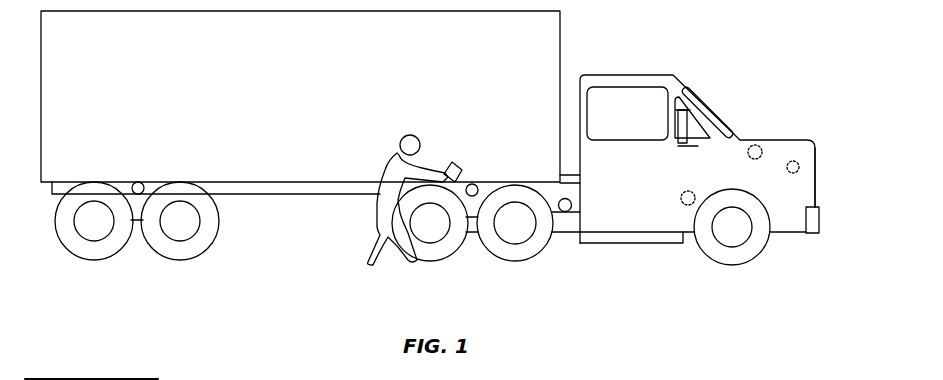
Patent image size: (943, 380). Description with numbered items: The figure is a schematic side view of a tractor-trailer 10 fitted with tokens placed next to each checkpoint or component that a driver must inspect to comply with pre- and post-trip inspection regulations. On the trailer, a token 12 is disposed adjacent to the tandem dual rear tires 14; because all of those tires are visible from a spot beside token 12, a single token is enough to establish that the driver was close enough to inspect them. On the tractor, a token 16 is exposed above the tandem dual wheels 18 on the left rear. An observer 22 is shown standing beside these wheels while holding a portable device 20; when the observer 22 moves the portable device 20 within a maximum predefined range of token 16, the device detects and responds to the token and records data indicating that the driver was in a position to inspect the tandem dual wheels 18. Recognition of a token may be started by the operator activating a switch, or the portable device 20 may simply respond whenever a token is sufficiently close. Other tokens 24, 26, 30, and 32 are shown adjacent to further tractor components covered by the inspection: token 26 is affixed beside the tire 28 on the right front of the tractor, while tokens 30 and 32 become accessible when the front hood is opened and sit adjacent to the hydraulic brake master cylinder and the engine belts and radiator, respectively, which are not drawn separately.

The tractor-trailer 10 is at (755, 274).
The token 12 is at (143, 184).
The tandem dual rear tires 14 is at (57, 227).
The token 16 is at (480, 185).
The tandem dual wheels 18 is at (447, 248).
The portable device 20 is at (453, 163).
The observer 22 is at (382, 225).
The token 24 is at (567, 211).
The token 26 is at (686, 203).
The tire 28 is at (718, 252).
The token 30 is at (769, 134).
The token 32 is at (811, 170).